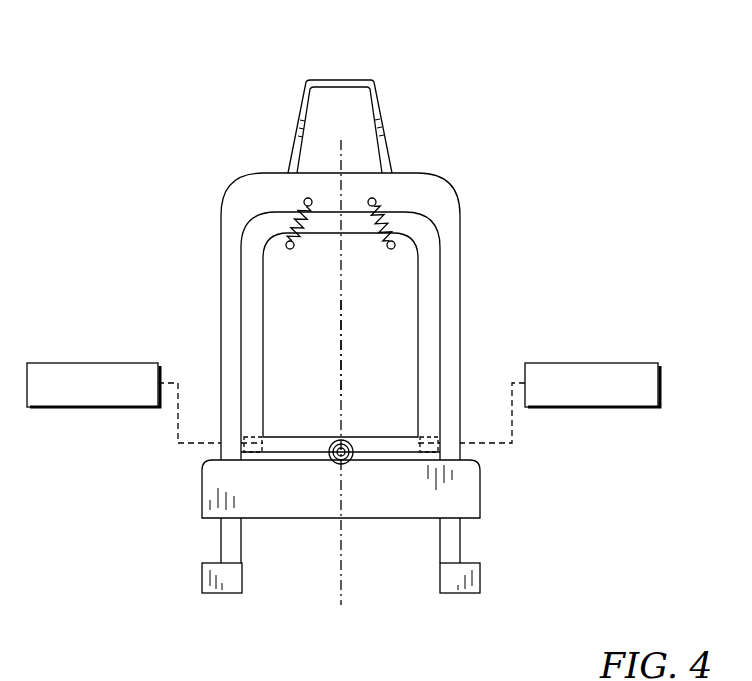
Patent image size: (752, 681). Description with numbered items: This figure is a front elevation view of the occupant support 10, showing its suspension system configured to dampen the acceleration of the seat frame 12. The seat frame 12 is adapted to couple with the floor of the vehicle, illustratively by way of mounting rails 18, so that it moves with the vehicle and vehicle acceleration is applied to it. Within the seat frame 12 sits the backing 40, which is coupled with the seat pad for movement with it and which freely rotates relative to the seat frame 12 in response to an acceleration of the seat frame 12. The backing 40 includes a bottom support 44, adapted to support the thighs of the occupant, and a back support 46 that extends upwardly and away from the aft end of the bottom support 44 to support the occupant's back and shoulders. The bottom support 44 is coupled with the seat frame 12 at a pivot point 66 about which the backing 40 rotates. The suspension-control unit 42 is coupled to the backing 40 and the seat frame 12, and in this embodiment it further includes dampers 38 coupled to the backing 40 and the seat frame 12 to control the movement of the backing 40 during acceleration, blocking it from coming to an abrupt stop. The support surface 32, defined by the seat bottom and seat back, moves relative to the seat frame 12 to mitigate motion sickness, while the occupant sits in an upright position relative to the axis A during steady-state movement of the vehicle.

The occupant support 10 is at (403, 79).
The seat frame 12 is at (412, 164).
The mounting rails 18 is at (448, 600).
The support surface 32 is at (336, 344).
The dampers 38 is at (78, 363).
The backing 40 is at (421, 367).
The suspension-control unit 42 is at (286, 216).
The bottom support 44 is at (398, 442).
The back support 46 is at (385, 306).
The pivot point 66 is at (346, 462).
The axis A is at (349, 166).